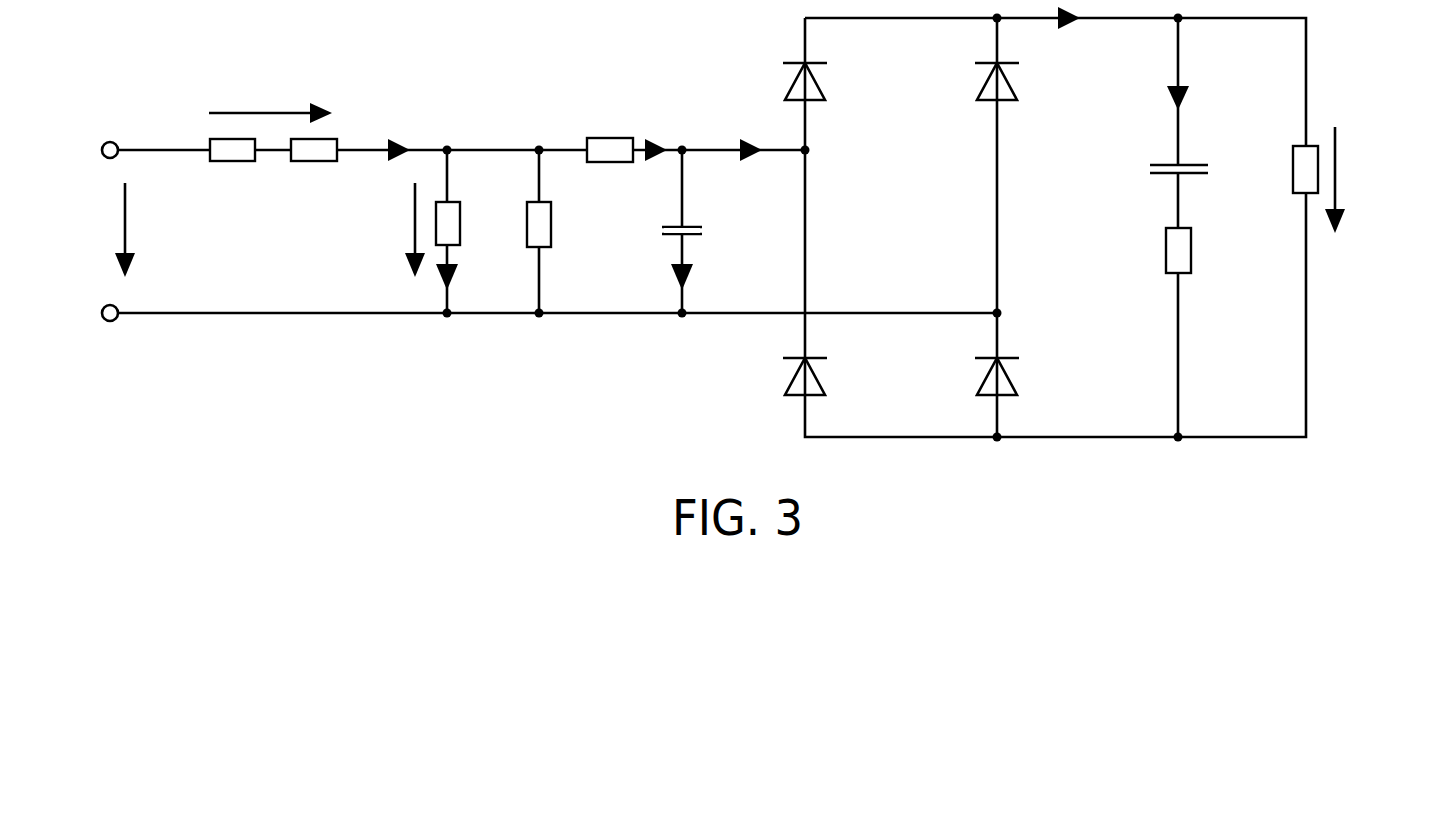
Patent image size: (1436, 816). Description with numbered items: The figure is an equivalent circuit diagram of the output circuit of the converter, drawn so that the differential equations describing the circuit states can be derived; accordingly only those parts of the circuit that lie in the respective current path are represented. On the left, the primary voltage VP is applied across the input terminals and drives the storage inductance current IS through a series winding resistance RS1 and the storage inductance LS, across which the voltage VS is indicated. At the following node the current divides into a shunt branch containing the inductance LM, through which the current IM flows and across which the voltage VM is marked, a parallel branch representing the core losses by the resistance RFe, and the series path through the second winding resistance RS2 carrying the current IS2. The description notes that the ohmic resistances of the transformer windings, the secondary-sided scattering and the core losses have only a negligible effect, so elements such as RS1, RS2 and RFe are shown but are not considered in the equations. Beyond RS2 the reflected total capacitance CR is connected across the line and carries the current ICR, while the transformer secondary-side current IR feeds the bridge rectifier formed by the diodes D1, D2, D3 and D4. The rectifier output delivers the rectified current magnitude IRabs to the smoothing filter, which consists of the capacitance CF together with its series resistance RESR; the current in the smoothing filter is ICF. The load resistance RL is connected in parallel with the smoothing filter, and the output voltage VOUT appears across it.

The primary series resistance RS1 is at (237, 175).
The storage inductance LS is at (314, 175).
The magnetizing inductance LM is at (470, 222).
The core loss resistance RFe is at (567, 223).
The secondary series resistance RS2 is at (614, 170).
The reflected total capacitance CR is at (703, 232).
The diode in the bridge rectifier D1 is at (833, 81).
The diode in the bridge rectifier D2 is at (833, 380).
The diode in the bridge rectifier D3 is at (1025, 81).
The diode in the bridge rectifier D4 is at (1025, 380).
The capacitance in the smoothing filter CF is at (1159, 172).
The equivalent series resistance of filter capacitor RESR is at (1149, 286).
The load resistance RL is at (1287, 170).
The source voltage VS is at (270, 98).
The primary voltage VP is at (142, 230).
The magnetizing voltage VM is at (397, 230).
The current flow of the storage inductance IS is at (399, 130).
The secondary current IS2 is at (655, 130).
The current flow of the transformer secondary side IR is at (747, 130).
The magnetizing current IM is at (465, 274).
The resonant capacitor current ICR is at (706, 275).
The rectified current magnitude IRabs is at (1135, 63).
The current flow in the smoothing filter ICF is at (1202, 102).
The output voltage VOUT is at (1371, 180).